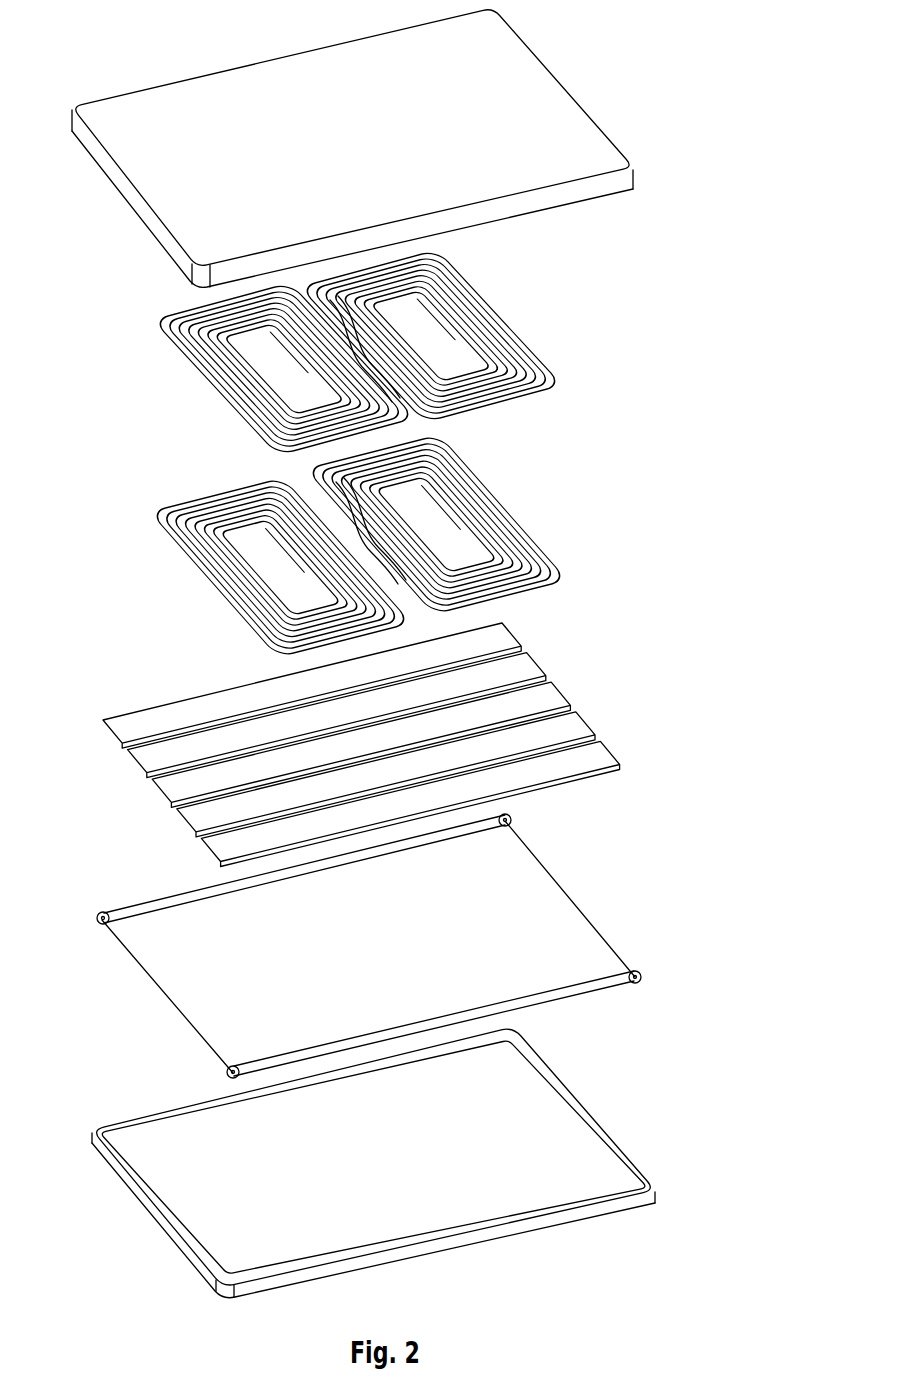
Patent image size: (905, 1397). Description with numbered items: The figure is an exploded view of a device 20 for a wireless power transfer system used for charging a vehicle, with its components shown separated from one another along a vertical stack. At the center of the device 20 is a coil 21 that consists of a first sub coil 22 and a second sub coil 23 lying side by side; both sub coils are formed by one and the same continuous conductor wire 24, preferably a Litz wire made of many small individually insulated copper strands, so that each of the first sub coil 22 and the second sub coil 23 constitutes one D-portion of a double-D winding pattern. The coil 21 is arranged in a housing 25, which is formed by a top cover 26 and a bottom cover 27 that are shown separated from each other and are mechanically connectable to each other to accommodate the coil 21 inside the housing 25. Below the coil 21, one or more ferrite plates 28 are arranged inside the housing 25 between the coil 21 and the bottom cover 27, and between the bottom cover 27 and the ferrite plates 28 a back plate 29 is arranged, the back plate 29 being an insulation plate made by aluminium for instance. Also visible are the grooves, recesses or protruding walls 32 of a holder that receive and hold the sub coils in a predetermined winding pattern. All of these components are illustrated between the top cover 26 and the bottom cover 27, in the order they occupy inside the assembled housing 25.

The device 20 is at (608, 651).
The coil 21 is at (541, 286).
The first sub coil 22 is at (525, 345).
The second sub coil 23 is at (205, 383).
The conductor wire 24 is at (165, 348).
The housing 25 is at (624, 65).
The top cover 26 is at (495, 63).
The bottom cover 27 is at (550, 1120).
The ferrite plates 28 is at (560, 737).
The back plate 29 is at (540, 912).
The protruding walls 32 is at (515, 523).